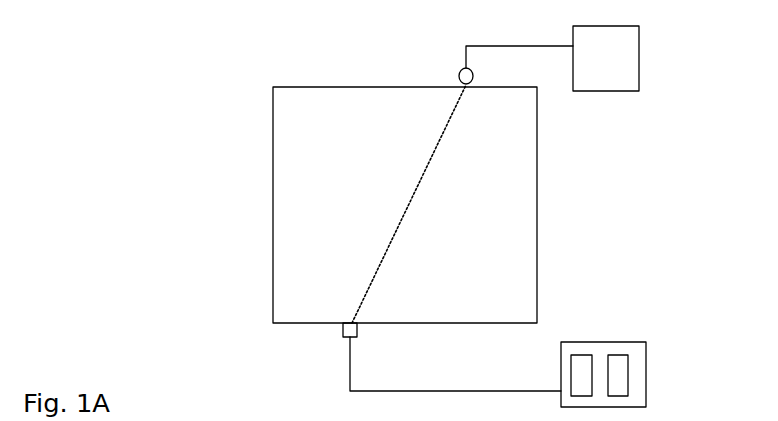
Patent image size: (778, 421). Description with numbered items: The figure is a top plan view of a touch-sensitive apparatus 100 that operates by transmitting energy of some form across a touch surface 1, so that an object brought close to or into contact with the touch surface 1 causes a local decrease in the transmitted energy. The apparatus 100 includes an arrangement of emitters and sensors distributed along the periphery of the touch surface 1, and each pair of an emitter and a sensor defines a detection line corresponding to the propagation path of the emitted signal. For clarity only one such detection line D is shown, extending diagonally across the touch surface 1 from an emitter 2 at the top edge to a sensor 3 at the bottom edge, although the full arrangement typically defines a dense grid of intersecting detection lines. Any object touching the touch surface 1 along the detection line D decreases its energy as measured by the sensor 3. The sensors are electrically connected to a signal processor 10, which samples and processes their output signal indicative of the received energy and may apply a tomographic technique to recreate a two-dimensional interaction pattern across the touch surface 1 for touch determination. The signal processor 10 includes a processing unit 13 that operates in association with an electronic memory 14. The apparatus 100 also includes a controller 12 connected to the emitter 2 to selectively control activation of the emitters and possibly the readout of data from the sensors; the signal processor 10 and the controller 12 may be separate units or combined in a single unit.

The touch-sensitive apparatus 100 is at (260, 120).
The touch surface 1 is at (503, 238).
The detection line D is at (400, 220).
The emitter 2 is at (458, 74).
The controller 12 is at (639, 52).
The sensor 3 is at (342, 332).
The signal processor 10 is at (646, 378).
The processing unit 13 is at (578, 355).
The electronic memory 14 is at (615, 355).